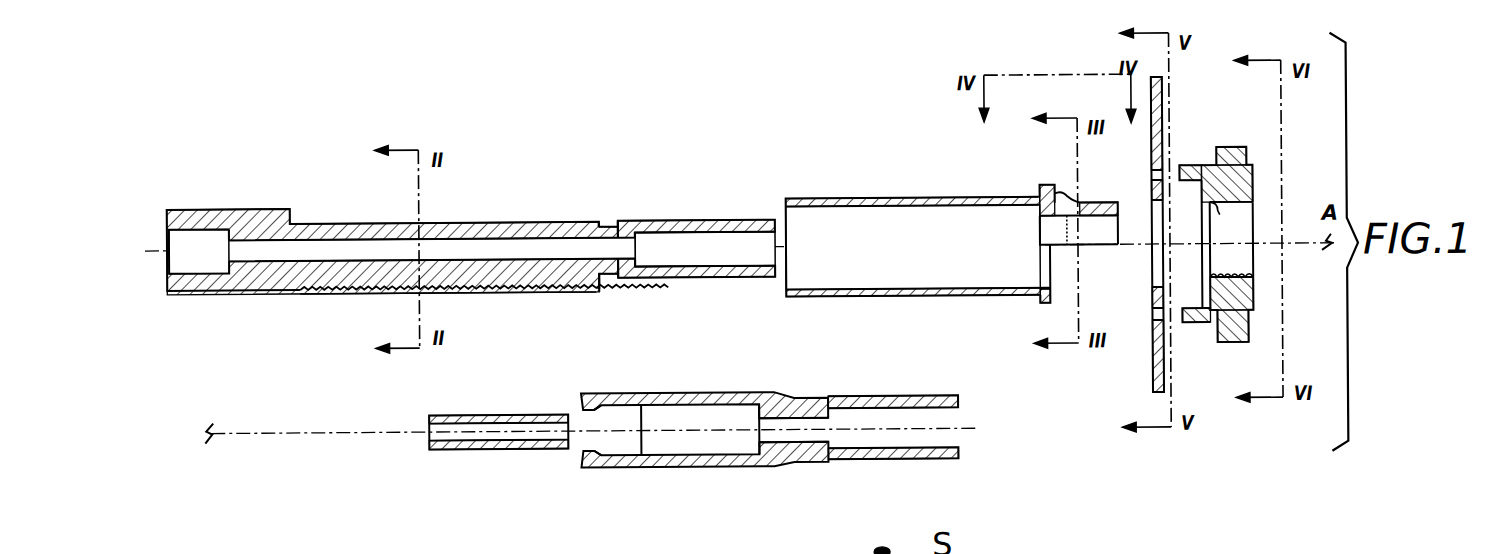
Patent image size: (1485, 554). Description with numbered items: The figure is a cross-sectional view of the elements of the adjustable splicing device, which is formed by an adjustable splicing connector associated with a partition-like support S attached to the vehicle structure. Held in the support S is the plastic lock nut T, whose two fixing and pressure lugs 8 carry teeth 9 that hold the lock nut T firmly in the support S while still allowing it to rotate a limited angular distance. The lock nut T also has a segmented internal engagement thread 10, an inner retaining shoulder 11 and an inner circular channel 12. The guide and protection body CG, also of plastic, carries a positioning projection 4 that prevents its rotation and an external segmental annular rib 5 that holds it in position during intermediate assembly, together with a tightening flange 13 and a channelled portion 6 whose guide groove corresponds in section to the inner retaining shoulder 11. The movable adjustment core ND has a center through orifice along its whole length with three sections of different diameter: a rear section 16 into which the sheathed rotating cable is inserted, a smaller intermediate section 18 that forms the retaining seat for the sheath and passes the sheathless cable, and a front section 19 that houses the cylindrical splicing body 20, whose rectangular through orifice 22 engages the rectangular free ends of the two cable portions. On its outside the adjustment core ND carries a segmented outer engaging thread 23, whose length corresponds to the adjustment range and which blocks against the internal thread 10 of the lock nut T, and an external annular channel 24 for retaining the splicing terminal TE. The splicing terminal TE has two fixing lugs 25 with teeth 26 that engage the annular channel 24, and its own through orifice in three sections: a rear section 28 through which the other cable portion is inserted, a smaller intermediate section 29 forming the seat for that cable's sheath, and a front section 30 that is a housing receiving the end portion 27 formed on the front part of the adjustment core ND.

The positioning projection 4 is at (1055, 204).
The external segmental annular rib 5 is at (1067, 207).
The channelled portion 6 is at (1087, 251).
The fixing and pressure lugs 8 is at (1203, 330).
The teeth 9 is at (1188, 174).
The segmented internal engagement thread 10 is at (1255, 286).
The inner retaining shoulder 11 is at (1208, 229).
The inner circular channel 12 is at (1198, 267).
The tightening flange 13 is at (1047, 311).
The rear section 16 is at (205, 267).
The intermediate section 18 is at (326, 256).
The front section 19 is at (670, 244).
The cylindrical splicing body 20 is at (463, 418).
The through orifice 22 is at (520, 430).
The segmented outer engaging thread 23 is at (330, 292).
The external annular channel 24 is at (602, 230).
The fixing lugs 25 is at (622, 396).
The teeth 26 is at (593, 400).
The end portion 27 is at (717, 224).
The rear section 28 is at (910, 420).
The intermediate section 29 is at (810, 430).
The front section 30 is at (695, 416).
The movable adjustment core ND is at (480, 222).
The guide and protection body CG is at (917, 178).
The splicing terminal TE is at (733, 471).
The support S is at (1147, 367).
The lock nut T is at (1227, 155).